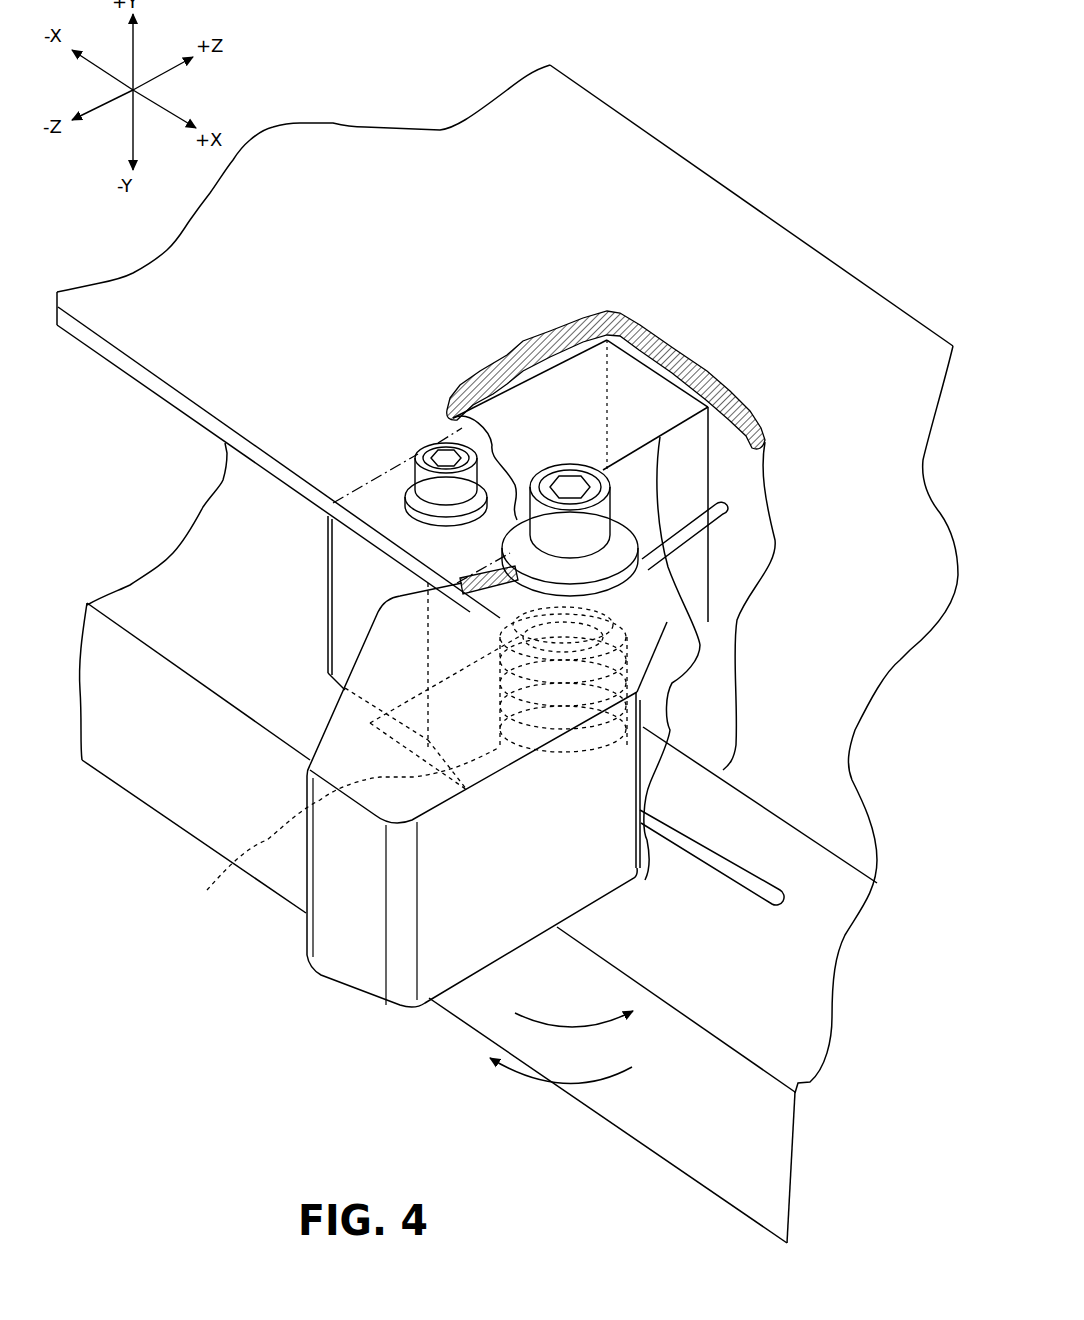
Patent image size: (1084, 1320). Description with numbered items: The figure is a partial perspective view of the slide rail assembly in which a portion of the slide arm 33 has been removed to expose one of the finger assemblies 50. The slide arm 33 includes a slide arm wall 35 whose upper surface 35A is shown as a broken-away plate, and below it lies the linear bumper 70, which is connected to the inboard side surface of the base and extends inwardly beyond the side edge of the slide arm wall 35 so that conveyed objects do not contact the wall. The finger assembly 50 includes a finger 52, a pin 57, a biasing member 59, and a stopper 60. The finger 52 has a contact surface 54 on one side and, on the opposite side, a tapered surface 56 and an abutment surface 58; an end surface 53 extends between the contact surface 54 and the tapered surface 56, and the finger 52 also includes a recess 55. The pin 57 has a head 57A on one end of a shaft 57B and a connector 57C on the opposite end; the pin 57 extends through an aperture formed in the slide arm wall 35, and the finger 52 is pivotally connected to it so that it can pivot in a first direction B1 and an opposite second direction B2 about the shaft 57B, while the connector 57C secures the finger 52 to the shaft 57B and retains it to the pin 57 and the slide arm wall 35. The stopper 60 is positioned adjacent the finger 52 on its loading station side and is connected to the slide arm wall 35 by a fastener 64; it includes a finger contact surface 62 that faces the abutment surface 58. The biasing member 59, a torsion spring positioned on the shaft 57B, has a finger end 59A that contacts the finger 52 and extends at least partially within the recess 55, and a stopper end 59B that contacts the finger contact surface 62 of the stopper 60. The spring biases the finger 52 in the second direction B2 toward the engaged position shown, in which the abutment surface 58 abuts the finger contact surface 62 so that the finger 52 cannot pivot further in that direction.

The slide arm 33 is at (719, 176).
The slide arm wall 35 is at (590, 112).
The upper surface 35A is at (425, 195).
The finger assembly 50 is at (155, 545).
The finger 52 is at (353, 1008).
The end surface 53 is at (343, 940).
The contact surface 54 is at (452, 955).
The recess 55 is at (655, 755).
The tapered surface 56 is at (332, 726).
The pin 57 is at (623, 483).
The head 57A is at (612, 522).
The shaft 57B is at (695, 620).
The connector 57C is at (758, 661).
The abutment surface 58 is at (395, 573).
The biasing member 59 is at (700, 672).
The finger end 59A is at (733, 857).
The stopper end 59B is at (712, 560).
The stopper 60 is at (312, 568).
The finger contact surface 62 is at (688, 470).
The fastener 64 is at (430, 445).
The linear bumper 70 is at (685, 1140).
The first direction B1 is at (574, 1014).
The second direction B2 is at (561, 1070).